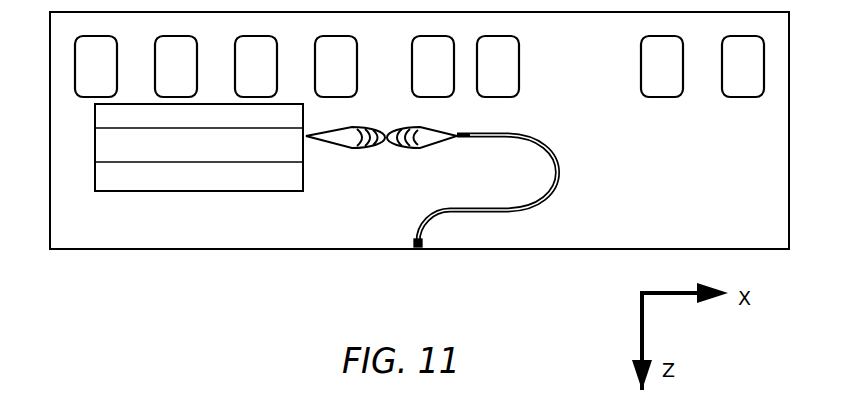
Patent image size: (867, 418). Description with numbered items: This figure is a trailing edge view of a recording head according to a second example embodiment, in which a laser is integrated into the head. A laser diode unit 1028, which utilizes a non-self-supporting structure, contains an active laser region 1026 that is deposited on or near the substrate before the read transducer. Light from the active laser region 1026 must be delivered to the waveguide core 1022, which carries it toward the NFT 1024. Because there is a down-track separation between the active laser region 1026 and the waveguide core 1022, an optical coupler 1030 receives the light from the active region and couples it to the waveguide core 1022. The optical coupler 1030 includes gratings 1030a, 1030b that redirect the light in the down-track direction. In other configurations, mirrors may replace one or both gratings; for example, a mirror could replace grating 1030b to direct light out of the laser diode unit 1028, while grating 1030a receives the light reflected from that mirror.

The waveguide core 1022 is at (513, 212).
The NFT 1024 is at (418, 248).
The active laser region 1026 is at (140, 163).
The laser diode unit 1028 is at (233, 190).
The optical coupler 1030 is at (412, 196).
The grating 1030a is at (453, 125).
The grating 1030b is at (365, 148).